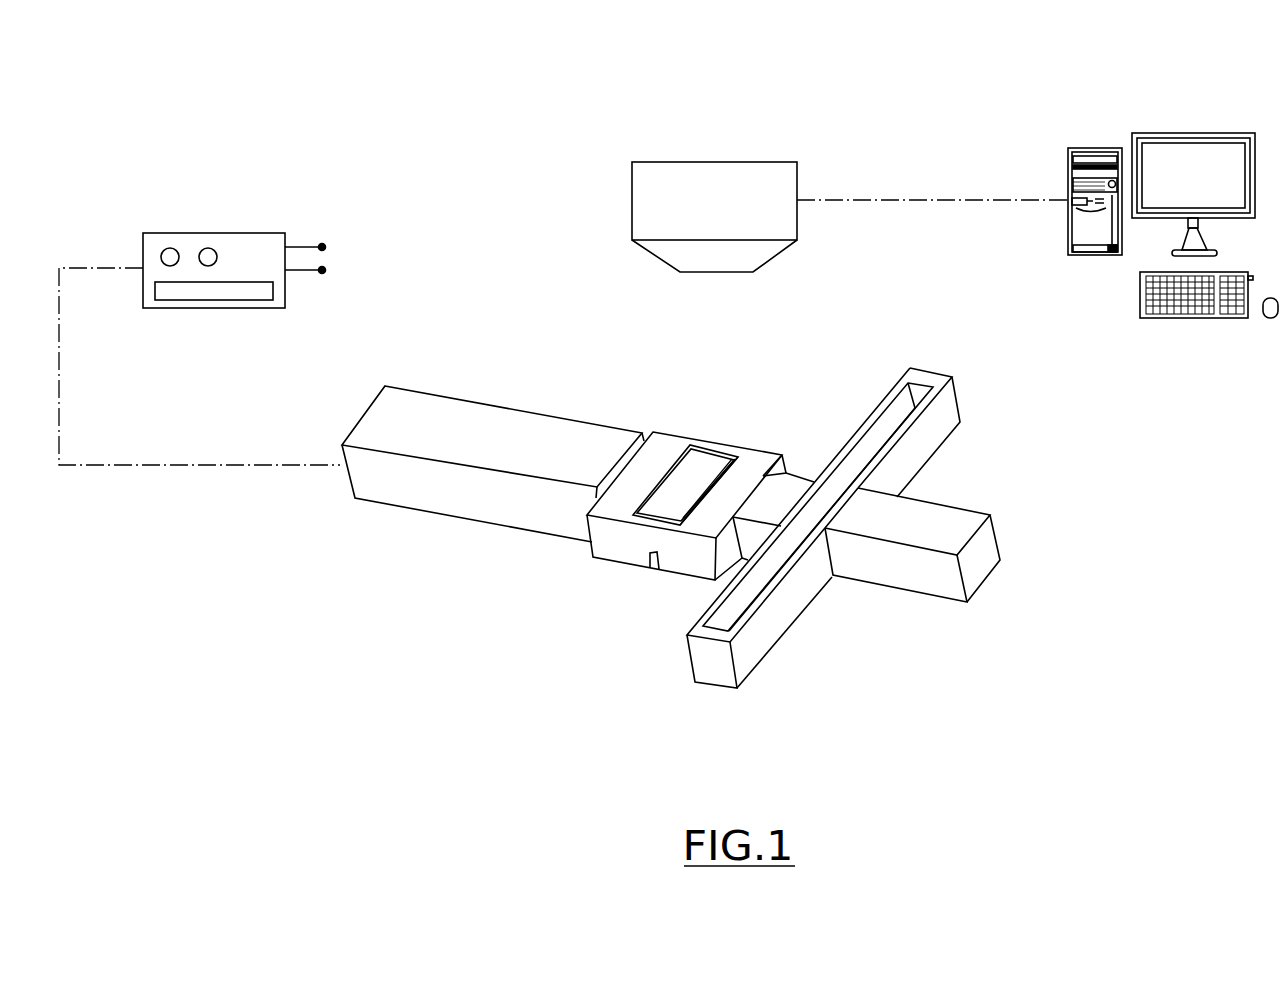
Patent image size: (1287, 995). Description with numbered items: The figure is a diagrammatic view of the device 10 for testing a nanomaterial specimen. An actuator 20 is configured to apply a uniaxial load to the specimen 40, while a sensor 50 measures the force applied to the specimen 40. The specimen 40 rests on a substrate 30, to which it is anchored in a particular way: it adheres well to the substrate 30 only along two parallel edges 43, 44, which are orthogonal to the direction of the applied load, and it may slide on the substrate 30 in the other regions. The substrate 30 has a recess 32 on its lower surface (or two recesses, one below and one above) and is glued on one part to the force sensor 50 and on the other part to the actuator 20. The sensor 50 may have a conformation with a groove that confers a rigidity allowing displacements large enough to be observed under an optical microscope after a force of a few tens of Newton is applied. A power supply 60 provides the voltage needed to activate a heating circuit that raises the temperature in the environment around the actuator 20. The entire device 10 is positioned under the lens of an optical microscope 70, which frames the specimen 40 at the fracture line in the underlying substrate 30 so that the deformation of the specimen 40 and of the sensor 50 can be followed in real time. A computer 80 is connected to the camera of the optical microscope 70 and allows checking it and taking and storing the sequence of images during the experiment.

The device 10 is at (506, 272).
The actuator 20 is at (453, 493).
The substrate 30 is at (603, 550).
The recess 32 is at (656, 562).
The specimen 40 is at (703, 455).
The parallel edge 43 is at (681, 461).
The parallel edge 44 is at (752, 455).
The sensor 50 is at (885, 420).
The power supply 60 is at (212, 233).
The optical microscope 70 is at (707, 190).
The computer 80 is at (1080, 148).